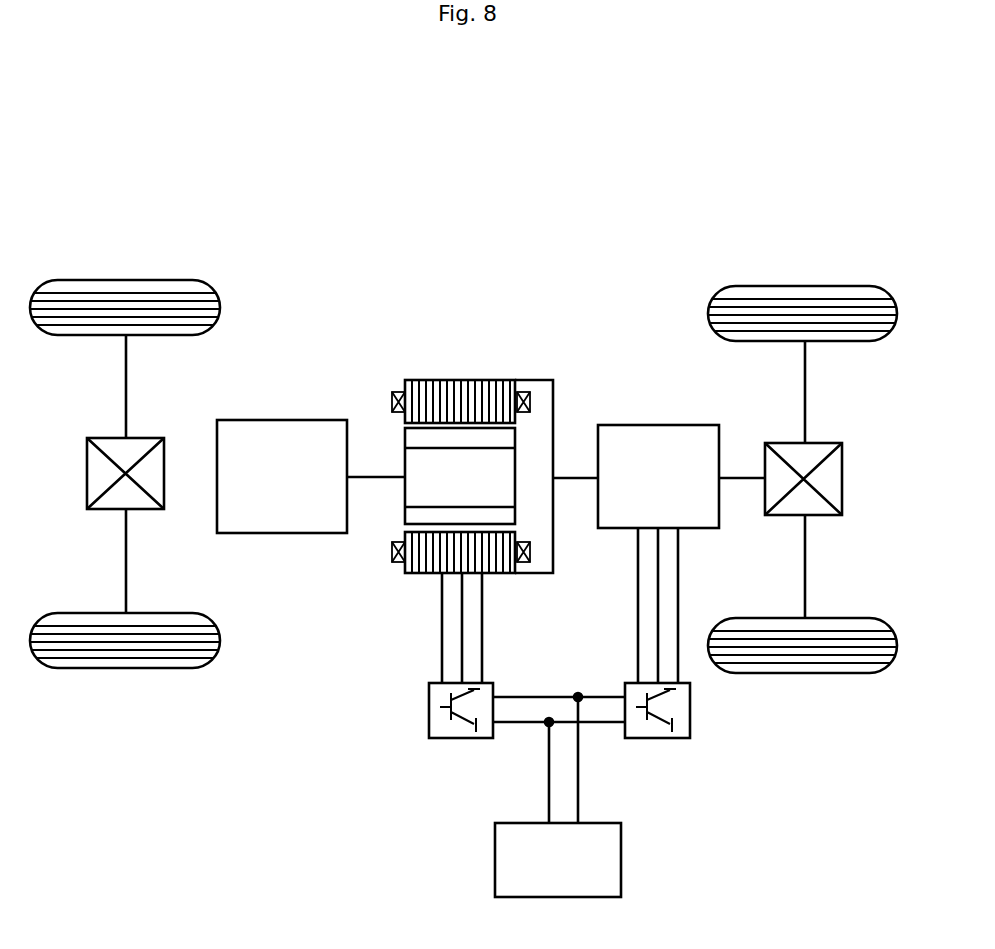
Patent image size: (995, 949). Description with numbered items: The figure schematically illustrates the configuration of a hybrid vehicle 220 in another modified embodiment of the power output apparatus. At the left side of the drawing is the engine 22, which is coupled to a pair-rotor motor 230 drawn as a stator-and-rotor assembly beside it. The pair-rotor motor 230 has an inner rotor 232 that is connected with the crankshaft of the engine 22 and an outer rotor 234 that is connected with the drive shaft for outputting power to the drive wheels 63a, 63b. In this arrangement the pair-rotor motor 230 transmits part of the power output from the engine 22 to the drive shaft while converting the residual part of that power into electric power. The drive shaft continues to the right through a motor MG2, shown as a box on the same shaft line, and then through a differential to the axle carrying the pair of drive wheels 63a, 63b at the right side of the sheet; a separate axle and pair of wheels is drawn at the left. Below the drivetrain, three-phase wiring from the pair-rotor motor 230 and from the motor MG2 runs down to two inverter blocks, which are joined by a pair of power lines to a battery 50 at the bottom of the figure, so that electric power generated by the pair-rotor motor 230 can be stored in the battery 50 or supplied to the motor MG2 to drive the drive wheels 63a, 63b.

The hybrid vehicle 220 is at (545, 158).
The engine 22 is at (283, 533).
The pair-rotor motor 230 is at (467, 230).
The inner rotor 232 is at (405, 455).
The outer rotor 234 is at (462, 380).
The motor MG2 is at (658, 425).
The drive wheel 63a is at (805, 286).
The drive wheel 63b is at (803, 673).
The battery 50 is at (621, 853).